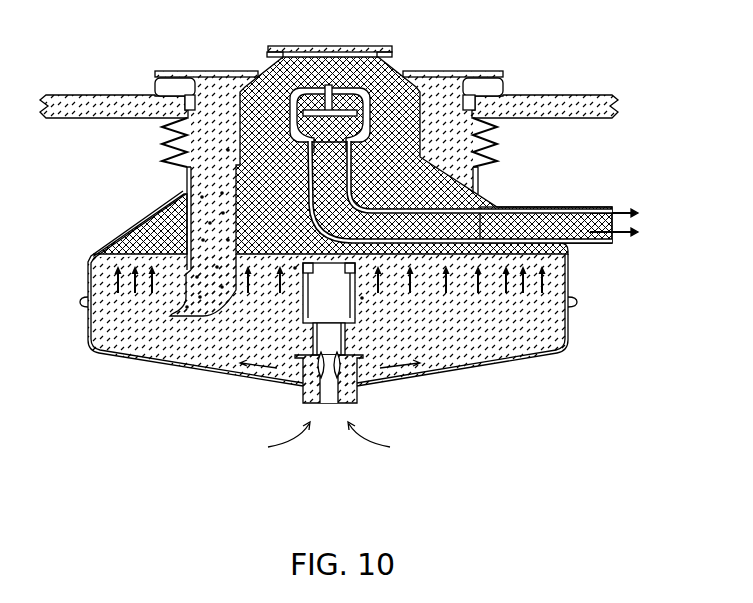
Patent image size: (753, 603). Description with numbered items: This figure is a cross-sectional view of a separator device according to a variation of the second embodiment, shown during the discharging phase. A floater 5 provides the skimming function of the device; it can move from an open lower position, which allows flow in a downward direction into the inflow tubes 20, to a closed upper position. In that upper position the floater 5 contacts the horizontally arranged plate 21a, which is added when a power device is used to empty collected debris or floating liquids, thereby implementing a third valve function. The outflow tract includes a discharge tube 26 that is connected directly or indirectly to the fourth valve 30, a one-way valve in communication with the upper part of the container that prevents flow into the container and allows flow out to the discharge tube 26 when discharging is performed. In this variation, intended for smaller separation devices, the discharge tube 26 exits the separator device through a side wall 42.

The horizontally arranged plate 21a is at (210, 72).
The floater 5 is at (177, 88).
The fourth valve 30 is at (347, 86).
The inflow tubes 20 is at (210, 206).
The side wall 42 is at (480, 195).
The discharge tube 26 is at (527, 220).